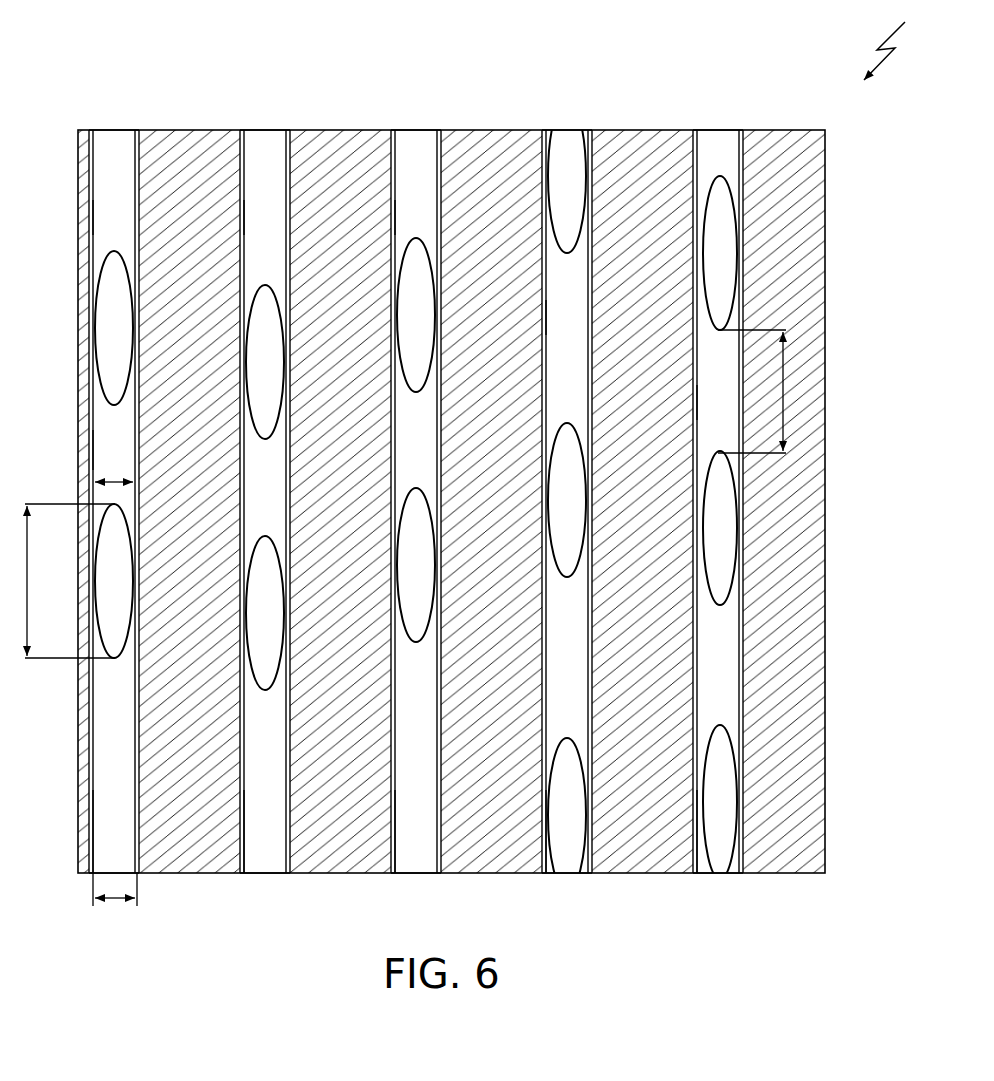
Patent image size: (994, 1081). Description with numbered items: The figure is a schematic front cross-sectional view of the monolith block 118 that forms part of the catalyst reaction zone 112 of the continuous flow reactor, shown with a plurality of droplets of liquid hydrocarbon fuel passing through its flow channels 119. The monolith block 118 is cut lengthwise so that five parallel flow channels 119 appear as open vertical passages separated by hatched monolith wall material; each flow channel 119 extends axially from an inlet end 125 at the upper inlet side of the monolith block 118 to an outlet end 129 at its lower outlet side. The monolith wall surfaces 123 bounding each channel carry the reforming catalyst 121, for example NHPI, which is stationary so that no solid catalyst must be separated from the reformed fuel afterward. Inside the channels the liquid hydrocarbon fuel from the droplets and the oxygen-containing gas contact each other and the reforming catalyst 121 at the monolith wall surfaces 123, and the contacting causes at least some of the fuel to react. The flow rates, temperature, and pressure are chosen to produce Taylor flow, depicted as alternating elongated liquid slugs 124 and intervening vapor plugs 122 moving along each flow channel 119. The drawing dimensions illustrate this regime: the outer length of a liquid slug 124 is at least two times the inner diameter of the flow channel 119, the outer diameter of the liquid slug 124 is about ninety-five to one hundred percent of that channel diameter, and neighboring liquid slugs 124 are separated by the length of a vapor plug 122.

The catalyst reaction zone 112 is at (903, 40).
The monolith block 118 is at (833, 130).
The flow channels 119 is at (115, 137).
The reforming catalyst 121 is at (95, 802).
The vapor plugs 122 is at (97, 448).
The monolith wall surfaces 123 is at (95, 217).
The liquid slugs 124 is at (97, 333).
The inlet end 125 is at (102, 130).
The outlet end 129 is at (97, 876).